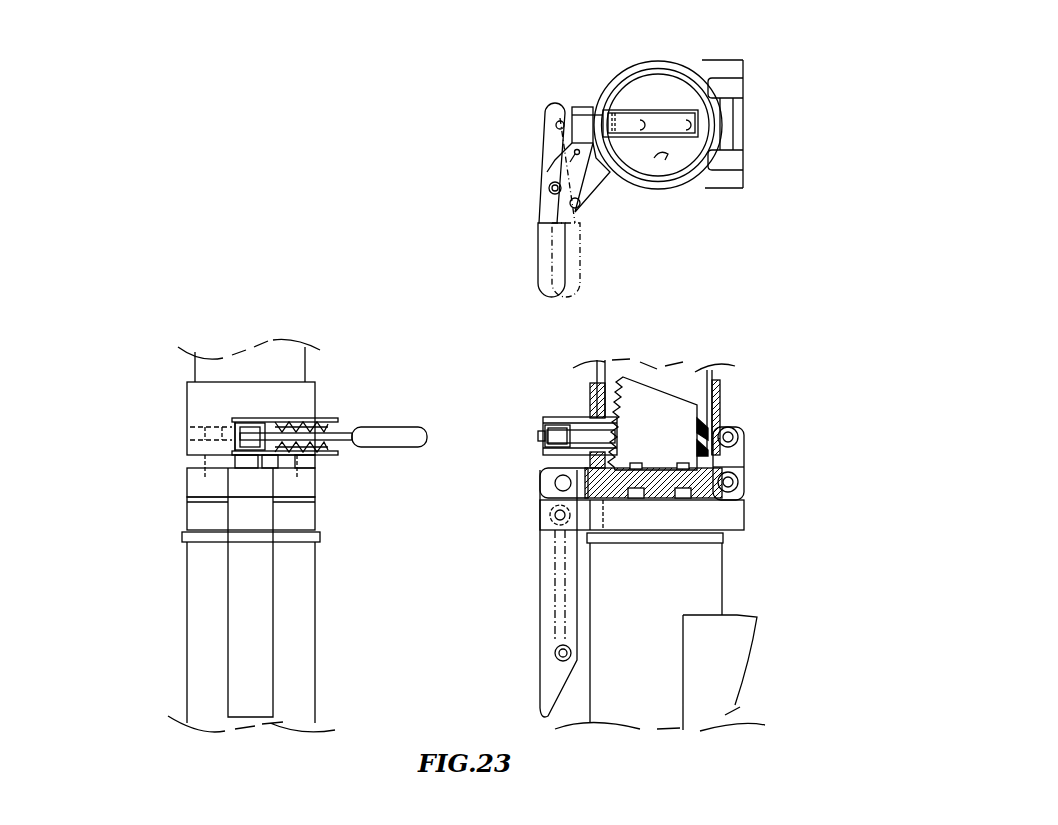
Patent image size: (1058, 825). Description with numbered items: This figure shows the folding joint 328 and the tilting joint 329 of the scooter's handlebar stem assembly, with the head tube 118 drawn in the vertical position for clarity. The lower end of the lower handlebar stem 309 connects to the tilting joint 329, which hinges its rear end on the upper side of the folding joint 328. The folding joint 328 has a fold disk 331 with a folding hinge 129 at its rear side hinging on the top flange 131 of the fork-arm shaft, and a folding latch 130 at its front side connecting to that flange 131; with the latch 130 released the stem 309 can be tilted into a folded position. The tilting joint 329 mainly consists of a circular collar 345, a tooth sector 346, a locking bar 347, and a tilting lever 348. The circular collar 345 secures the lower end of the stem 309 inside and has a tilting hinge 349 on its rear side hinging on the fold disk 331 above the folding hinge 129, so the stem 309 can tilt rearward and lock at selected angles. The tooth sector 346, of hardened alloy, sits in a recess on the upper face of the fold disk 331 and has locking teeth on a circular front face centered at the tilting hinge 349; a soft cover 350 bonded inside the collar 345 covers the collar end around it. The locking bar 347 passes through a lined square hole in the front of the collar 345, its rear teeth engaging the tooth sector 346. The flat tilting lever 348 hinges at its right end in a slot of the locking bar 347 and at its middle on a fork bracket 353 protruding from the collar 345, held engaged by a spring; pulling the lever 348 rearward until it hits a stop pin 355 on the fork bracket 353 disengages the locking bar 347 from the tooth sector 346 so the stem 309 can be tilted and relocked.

The lower handlebar stem 309 is at (620, 75).
The tooth sector 346 is at (666, 108).
The circular collar 345 is at (700, 62).
The fold disk 331 is at (745, 88).
The tilting lever 348 is at (548, 160).
The fork bracket 353 is at (596, 193).
The cover 350 is at (672, 160).
The stop pin 355 is at (580, 210).
The tilting joint 329 is at (128, 373).
The top flange 131 is at (187, 513).
The folding joint 328 is at (355, 525).
The head tube 118 is at (187, 596).
The folding latch 130 is at (228, 609).
The tilting hinge 349 is at (717, 432).
The folding hinge 129 is at (744, 470).
The locking bar 347 is at (600, 468).